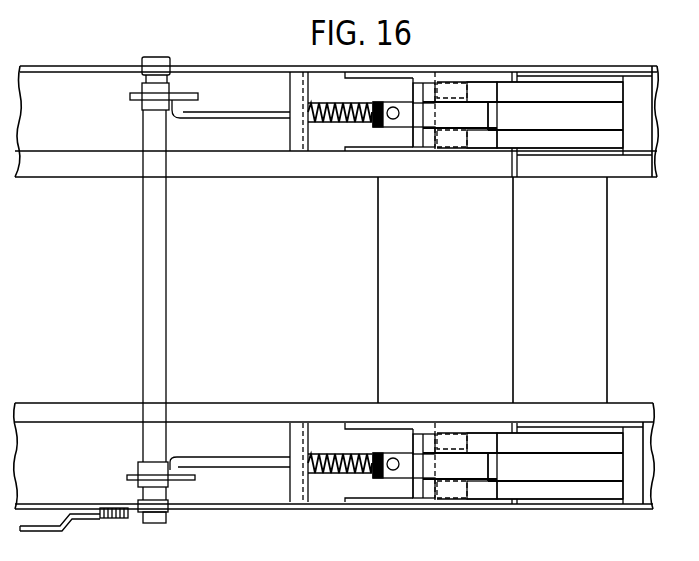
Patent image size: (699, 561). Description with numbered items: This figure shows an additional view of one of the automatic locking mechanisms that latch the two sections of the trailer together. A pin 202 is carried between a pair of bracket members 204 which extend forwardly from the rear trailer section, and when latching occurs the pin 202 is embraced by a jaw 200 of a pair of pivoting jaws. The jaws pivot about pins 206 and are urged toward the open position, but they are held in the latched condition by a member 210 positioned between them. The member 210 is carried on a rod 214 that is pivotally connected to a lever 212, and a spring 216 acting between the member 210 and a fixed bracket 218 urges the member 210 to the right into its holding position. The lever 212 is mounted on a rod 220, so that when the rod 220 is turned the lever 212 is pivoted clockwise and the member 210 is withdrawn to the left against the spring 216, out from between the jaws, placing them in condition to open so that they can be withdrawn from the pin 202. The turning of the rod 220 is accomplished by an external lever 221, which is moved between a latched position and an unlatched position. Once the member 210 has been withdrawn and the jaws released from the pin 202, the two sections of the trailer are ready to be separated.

The jaw 200 is at (400, 452).
The pin 202 is at (455, 437).
The bracket members 204 is at (522, 440).
The pins 206 is at (418, 430).
The member 210 is at (368, 455).
The lever 212 is at (127, 477).
The rod 214 is at (245, 476).
The spring 216 is at (318, 455).
The fixed bracket 218 is at (290, 437).
The rod 220 is at (148, 366).
The external lever 221 is at (60, 533).